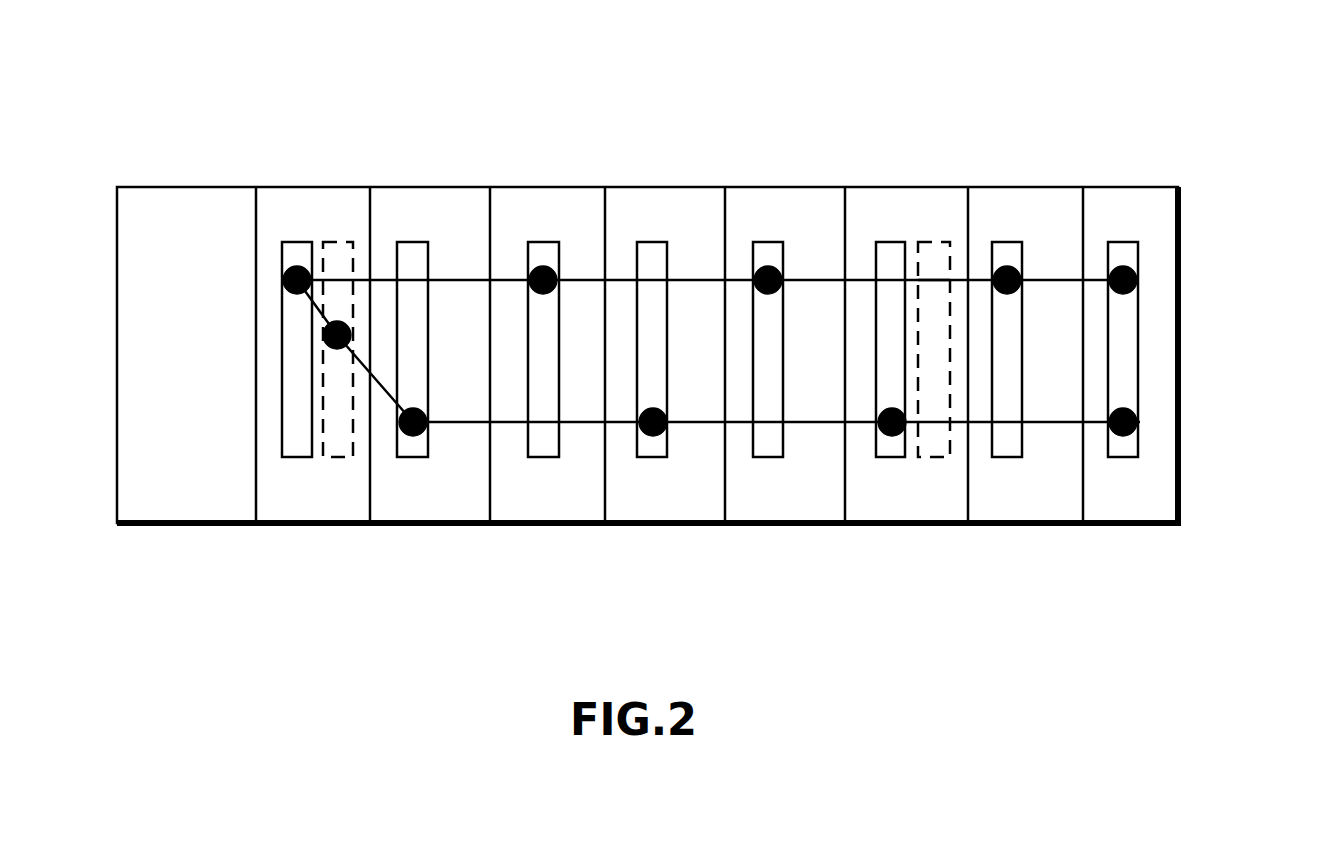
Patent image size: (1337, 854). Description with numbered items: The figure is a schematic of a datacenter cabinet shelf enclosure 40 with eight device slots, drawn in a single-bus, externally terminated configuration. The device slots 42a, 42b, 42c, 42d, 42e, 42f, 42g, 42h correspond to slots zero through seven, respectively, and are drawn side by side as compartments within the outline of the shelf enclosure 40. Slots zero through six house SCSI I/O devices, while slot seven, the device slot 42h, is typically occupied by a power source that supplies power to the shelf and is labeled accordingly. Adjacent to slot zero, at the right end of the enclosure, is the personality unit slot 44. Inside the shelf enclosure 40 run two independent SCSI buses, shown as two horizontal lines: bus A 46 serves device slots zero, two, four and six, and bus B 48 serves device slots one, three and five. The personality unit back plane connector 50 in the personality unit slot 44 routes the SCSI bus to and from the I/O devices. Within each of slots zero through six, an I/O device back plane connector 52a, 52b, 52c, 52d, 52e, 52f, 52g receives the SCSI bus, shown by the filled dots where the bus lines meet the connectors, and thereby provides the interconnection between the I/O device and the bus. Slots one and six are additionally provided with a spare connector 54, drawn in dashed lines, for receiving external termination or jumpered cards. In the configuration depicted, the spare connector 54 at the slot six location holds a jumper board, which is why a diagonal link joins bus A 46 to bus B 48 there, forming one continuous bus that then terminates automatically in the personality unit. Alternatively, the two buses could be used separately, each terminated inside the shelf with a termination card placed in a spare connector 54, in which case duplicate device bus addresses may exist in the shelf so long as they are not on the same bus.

The datacenter cabinet shelf enclosure 40 is at (1205, 123).
The device slot 42a is at (1013, 188).
The device slot 42b is at (918, 188).
The device slot 42c is at (787, 188).
The device slot 42d is at (668, 188).
The device slot 42e is at (552, 188).
The device slot 42f is at (442, 188).
The device slot 42g is at (320, 188).
The device slot 42h is at (188, 188).
The personality unit slot 44 is at (1122, 188).
The bus A 46 is at (932, 281).
The bus B 48 is at (708, 423).
The personality unit back plane connector 50 is at (1140, 246).
The I/O device back plane connector 52a is at (1007, 458).
The I/O device back plane connector 52b is at (892, 458).
The I/O device back plane connector 52c is at (770, 458).
The I/O device back plane connector 52d is at (652, 458).
The I/O device back plane connector 52e is at (543, 458).
The I/O device back plane connector 52f is at (412, 458).
The I/O device back plane connector 52g is at (295, 458).
The spare connector 54 is at (335, 458).